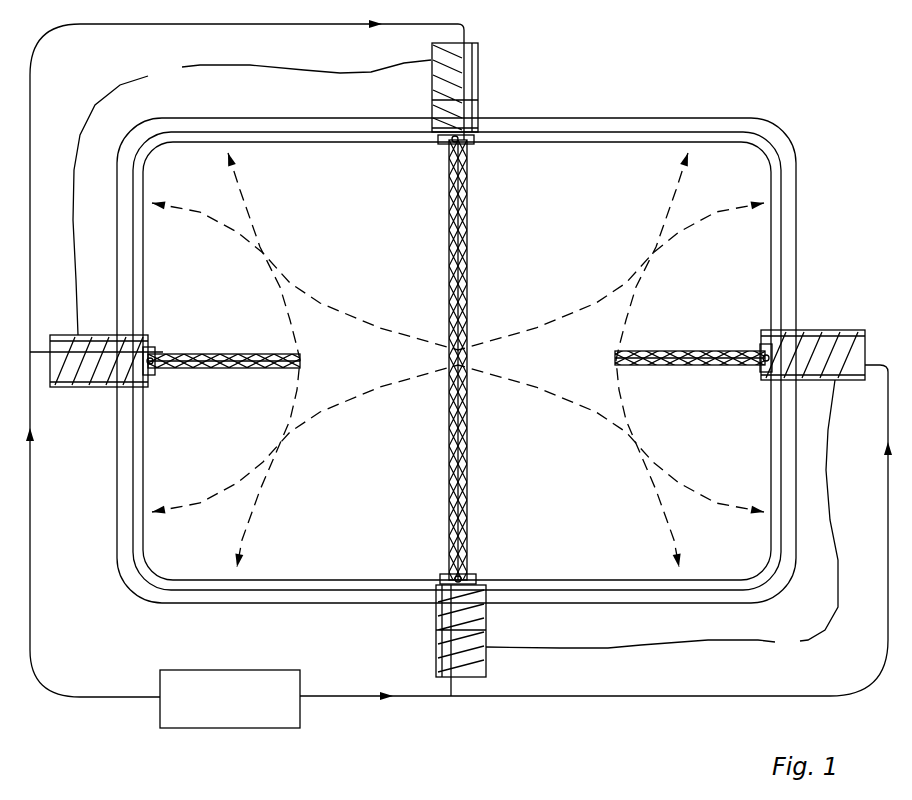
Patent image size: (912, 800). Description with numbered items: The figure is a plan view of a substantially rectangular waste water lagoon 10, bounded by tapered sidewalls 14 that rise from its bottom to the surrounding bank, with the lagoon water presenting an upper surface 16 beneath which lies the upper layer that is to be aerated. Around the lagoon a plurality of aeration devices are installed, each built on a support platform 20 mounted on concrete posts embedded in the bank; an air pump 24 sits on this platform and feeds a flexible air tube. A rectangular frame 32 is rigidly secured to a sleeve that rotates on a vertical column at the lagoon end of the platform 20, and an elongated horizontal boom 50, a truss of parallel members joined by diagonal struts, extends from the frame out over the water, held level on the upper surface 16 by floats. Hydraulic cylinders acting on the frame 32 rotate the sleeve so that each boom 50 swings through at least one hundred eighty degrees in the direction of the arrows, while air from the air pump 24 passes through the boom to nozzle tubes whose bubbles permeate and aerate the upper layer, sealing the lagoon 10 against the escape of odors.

The lagoon 10 is at (648, 130).
The tapered sidewalls 14 is at (668, 135).
The upper surface 16 is at (712, 152).
The support platform 20 is at (455, 357).
The air pump 24 is at (300, 672).
The rectangular frame 32 is at (143, 347).
The horizontal boom 50 is at (228, 350).